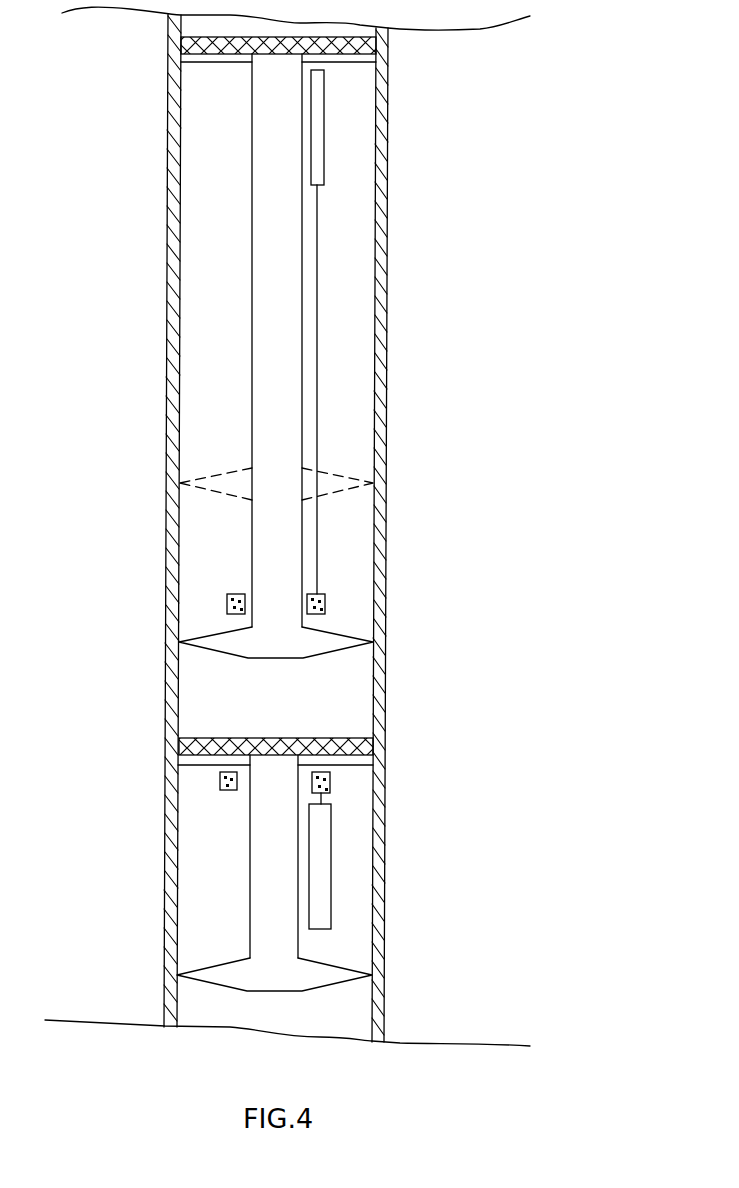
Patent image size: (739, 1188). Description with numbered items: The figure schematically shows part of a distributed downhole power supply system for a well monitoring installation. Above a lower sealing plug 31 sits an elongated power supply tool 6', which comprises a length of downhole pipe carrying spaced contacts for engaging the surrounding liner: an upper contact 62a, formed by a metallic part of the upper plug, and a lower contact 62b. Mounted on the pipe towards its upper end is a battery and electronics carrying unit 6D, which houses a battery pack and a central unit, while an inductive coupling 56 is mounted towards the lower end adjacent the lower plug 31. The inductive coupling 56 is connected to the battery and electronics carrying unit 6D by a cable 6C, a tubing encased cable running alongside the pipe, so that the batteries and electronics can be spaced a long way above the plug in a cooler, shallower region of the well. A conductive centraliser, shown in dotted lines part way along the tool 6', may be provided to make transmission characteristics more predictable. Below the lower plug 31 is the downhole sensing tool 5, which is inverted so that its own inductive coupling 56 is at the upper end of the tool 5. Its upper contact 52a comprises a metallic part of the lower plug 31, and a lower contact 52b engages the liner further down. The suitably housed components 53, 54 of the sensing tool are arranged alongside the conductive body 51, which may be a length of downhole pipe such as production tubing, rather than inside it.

The upper contact 62a is at (200, 60).
The elongated power supply tool 6' is at (183, 340).
The battery and electronics carrying unit 6D is at (316, 133).
The cable 6C is at (320, 350).
The inductive coupling 56 is at (324, 602).
The lower contact 62b is at (220, 638).
The lower sealing plug 31 is at (370, 737).
The upper contact 52a is at (207, 762).
The downhole sensing tool 5 is at (268, 874).
The conductive body 51 is at (266, 873).
The lower contact 52b is at (213, 973).
The component of the sensing tool 53 is at (451, 866).
The component of the sensing tool 54 is at (317, 856).